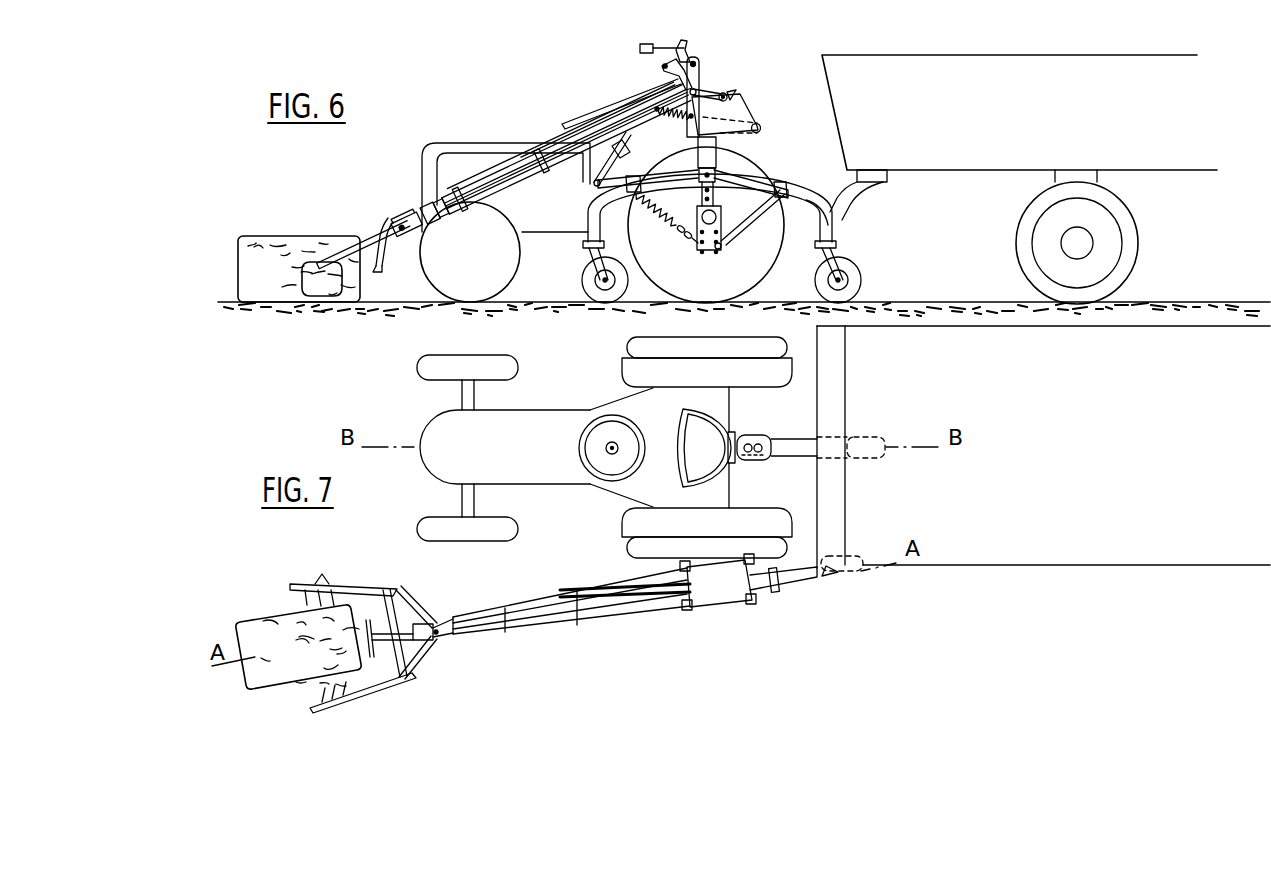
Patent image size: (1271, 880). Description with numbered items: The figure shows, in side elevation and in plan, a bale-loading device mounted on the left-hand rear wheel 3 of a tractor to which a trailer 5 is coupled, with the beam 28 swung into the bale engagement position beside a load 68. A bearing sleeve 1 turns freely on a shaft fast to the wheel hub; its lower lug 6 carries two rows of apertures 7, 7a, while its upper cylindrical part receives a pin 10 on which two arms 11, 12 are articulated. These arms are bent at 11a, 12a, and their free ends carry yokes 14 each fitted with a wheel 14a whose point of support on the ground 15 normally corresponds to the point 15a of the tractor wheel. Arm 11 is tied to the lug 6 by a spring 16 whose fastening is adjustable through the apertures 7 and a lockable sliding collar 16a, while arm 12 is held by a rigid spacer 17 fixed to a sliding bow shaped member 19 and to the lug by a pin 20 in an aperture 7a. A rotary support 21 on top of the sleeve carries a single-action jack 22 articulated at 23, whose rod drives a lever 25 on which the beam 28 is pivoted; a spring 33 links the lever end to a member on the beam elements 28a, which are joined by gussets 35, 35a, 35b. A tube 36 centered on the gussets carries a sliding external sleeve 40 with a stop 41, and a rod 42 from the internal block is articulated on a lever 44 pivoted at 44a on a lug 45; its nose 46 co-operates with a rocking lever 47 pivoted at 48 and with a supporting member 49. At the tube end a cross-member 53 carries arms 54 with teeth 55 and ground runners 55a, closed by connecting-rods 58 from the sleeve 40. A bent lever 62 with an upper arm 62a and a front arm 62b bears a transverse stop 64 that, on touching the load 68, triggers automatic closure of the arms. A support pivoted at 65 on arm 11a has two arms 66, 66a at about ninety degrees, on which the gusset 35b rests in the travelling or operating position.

In FIG. 6, the bearing sleeve 1 is at (716, 217).
In FIG. 6, the left-hand rear wheel 3 is at (766, 278).
In FIG. 7, the left-hand rear wheel 3 is at (762, 550).
In FIG. 6, the trailer 5 is at (1019, 179).
In FIG. 7, the trailer 5 is at (1043, 447).
In FIG. 6, the lug 6 is at (708, 252).
In FIG. 6, the apertures 7 is at (701, 253).
In FIG. 6, the apertures 7a is at (717, 254).
In FIG. 6, the pin 10 is at (714, 173).
In FIG. 6, the arm 11 is at (678, 181).
In FIG. 6, the bent part of arm 11a is at (589, 218).
In FIG. 6, the arm 12 is at (737, 185).
In FIG. 7, the arm 12 is at (793, 573).
In FIG. 6, the bent part of arm 12a is at (826, 205).
In FIG. 6, the yokes 14 is at (592, 256).
In FIG. 7, the yokes 14 is at (832, 572).
In FIG. 6, the wheel 14a is at (584, 287).
In FIG. 6, the ground 15 is at (584, 314).
In FIG. 6, the point of support 15a is at (708, 304).
In FIG. 6, the spring 16 is at (657, 219).
In FIG. 6, the sliding collar 16a is at (630, 192).
In FIG. 6, the rigid spacer 17 is at (753, 219).
In FIG. 6, the sliding bow shaped member 19 is at (781, 186).
In FIG. 6, the pin 20 is at (722, 248).
In FIG. 6, the rotary support 21 is at (766, 112).
In FIG. 6, the single-action jack 22 is at (771, 141).
In FIG. 6, the jack articulation 23 is at (762, 128).
In FIG. 6, the lever 25 is at (700, 86).
In FIG. 7, the beam 28 is at (557, 628).
In FIG. 6, the constituent elements of beam 28a is at (588, 117).
In FIG. 7, the constituent elements of beam 28a is at (533, 604).
In FIG. 6, the spring 33 is at (664, 117).
In FIG. 6, the gusset 35 is at (462, 200).
In FIG. 6, the gusset 35a is at (513, 177).
In FIG. 6, the gusset 35b is at (573, 143).
In FIG. 6, the tube 36 is at (477, 190).
In FIG. 7, the tube 36 is at (443, 625).
In FIG. 7, the external sleeve 40 is at (434, 638).
In FIG. 6, the stop 41 is at (420, 212).
In FIG. 6, the rod 42 is at (515, 176).
In FIG. 6, the lever 44 is at (638, 86).
In FIG. 6, the pivot 44a is at (661, 67).
In FIG. 6, the lug 45 is at (699, 76).
In FIG. 6, the nose 46 is at (662, 64).
In FIG. 6, the rocking lever 47 is at (640, 49).
In FIG. 6, the pivot 48 is at (690, 55).
In FIG. 6, the supporting member 49 is at (736, 95).
In FIG. 7, the cross-member 53 is at (393, 648).
In FIG. 6, the arms 54 is at (368, 246).
In FIG. 7, the arms 54 is at (358, 585).
In FIG. 7, the teeth or dogs 55 is at (321, 583).
In FIG. 6, the runner 55a is at (333, 296).
In FIG. 7, the connecting-rods 58 is at (416, 611).
In FIG. 6, the bent lever 62 is at (389, 216).
In FIG. 7, the bent lever 62 is at (407, 635).
In FIG. 6, the upper arm of bent lever 62a is at (407, 214).
In FIG. 6, the front arm of bent lever 62b is at (385, 246).
In FIG. 6, the transverse stop 64 is at (378, 267).
In FIG. 7, the transverse stop 64 is at (368, 620).
In FIG. 6, the pivot 65 is at (594, 184).
In FIG. 6, the arm of support 66 is at (603, 150).
In FIG. 6, the arm of support 66a is at (625, 149).
In FIG. 6, the load 68 is at (276, 262).